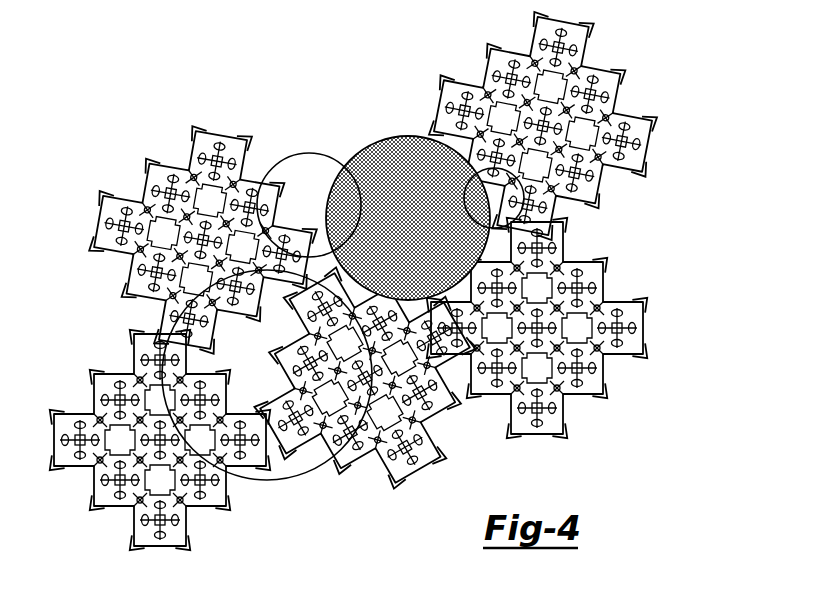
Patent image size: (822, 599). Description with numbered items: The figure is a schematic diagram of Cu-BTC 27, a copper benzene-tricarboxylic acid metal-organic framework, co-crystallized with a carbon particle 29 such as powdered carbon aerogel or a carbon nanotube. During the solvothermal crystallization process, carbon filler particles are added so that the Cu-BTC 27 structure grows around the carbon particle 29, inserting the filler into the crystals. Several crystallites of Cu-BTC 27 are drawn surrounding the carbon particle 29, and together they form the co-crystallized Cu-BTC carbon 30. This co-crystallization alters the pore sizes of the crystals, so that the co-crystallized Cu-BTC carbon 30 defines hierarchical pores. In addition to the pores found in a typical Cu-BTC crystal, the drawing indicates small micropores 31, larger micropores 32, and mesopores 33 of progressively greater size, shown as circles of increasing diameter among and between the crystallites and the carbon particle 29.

The Cu-BTC 27 is at (650, 122).
The carbon particle 29 is at (400, 145).
The co-crystallized Cu-BTC carbon 30 is at (645, 63).
The small micropores 31 is at (522, 207).
The larger micropores 32 is at (301, 165).
The mesopores 33 is at (250, 355).